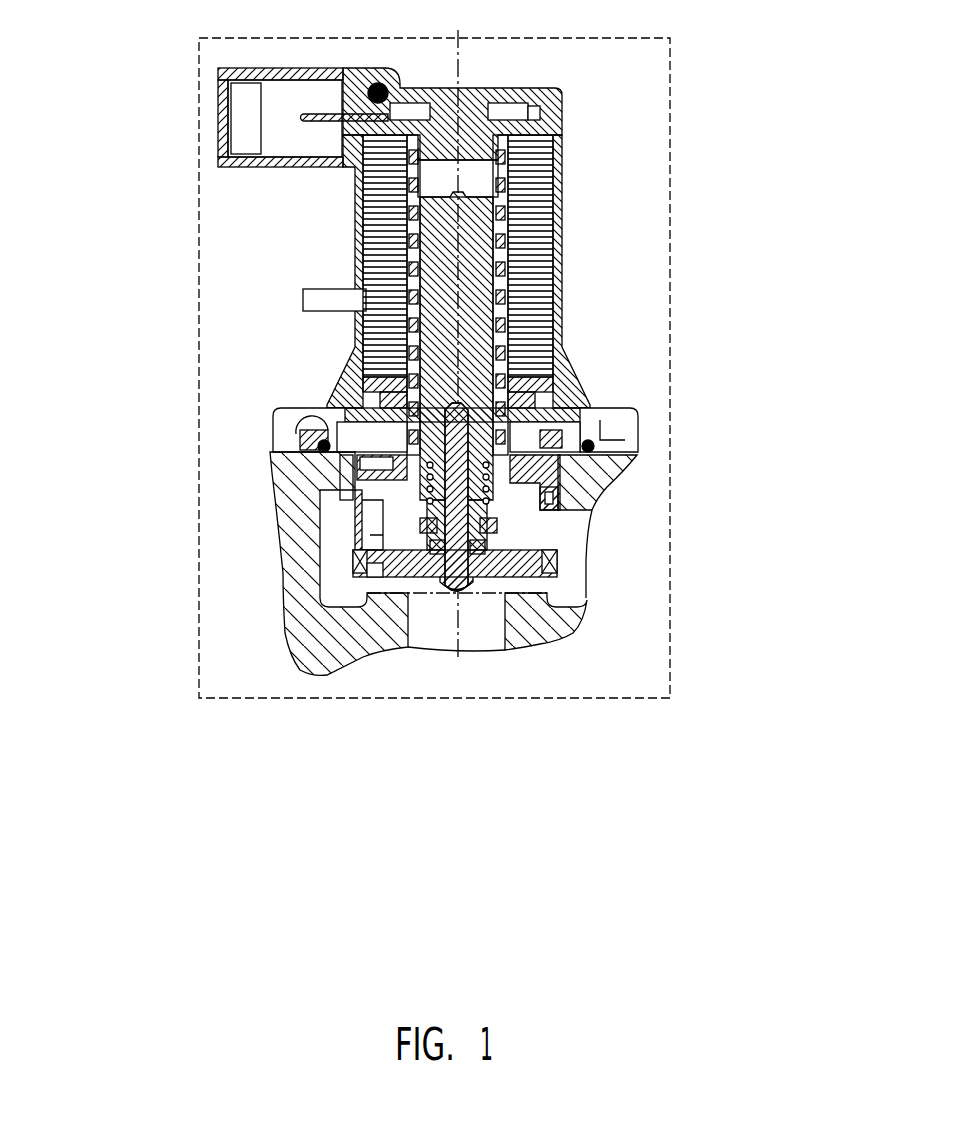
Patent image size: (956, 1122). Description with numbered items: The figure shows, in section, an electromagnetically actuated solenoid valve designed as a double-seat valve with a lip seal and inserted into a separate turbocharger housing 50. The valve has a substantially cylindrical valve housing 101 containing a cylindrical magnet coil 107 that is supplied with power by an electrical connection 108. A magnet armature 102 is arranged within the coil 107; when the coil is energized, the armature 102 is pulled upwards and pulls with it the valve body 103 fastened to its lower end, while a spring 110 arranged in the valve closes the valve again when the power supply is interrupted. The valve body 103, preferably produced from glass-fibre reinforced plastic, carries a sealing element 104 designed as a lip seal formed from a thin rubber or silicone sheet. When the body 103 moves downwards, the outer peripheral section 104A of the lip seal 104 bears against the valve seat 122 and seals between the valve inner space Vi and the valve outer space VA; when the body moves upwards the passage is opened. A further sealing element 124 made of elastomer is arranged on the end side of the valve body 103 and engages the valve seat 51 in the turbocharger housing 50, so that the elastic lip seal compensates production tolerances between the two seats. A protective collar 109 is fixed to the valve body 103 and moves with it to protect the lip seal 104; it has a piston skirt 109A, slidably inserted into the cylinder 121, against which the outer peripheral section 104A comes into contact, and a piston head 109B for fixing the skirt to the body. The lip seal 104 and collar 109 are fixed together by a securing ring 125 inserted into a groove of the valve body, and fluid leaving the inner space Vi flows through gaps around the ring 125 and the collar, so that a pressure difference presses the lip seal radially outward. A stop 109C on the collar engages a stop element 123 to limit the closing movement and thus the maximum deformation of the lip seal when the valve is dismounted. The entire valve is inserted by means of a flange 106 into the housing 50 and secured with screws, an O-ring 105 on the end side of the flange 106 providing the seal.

The turbocharger housing 50 is at (517, 613).
The valve seat 51 is at (533, 603).
The valve housing 101 is at (357, 292).
The magnet armature 102 is at (478, 239).
The valve body 103 is at (385, 558).
The sealing element 104 is at (343, 480).
The outer peripheral section 104A is at (357, 493).
The O-ring 105 is at (590, 450).
The flange 106 is at (612, 452).
The magnet coil 107 is at (534, 240).
The electrical connection 108 is at (315, 117).
The protective collar 109 is at (574, 519).
The piston skirt 109A is at (557, 470).
The piston head 109B is at (553, 437).
The stop 109C is at (363, 510).
The spring 110 is at (407, 445).
The cylinder 121 is at (348, 437).
The valve seat 122 is at (355, 556).
The stop element 123 is at (566, 412).
The sealing element 124 is at (365, 560).
The securing ring 125 is at (557, 410).
The valve outer space VA is at (556, 518).
The valve inner space Vi is at (380, 440).